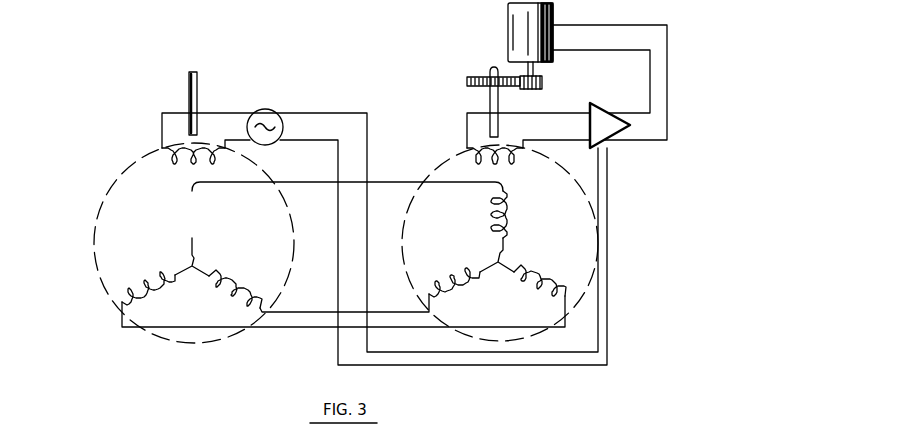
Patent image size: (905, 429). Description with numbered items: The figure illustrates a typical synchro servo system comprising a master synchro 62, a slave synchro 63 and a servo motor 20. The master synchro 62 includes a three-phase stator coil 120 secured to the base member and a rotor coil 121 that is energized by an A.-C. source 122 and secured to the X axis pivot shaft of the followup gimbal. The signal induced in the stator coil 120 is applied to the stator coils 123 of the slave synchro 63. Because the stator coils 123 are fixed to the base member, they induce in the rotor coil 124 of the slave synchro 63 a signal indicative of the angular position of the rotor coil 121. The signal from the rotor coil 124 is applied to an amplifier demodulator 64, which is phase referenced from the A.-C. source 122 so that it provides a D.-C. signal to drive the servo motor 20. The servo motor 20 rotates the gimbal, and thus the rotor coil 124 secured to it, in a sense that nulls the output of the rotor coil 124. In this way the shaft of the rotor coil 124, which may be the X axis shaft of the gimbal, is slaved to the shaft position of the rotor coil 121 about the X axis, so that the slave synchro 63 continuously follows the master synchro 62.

The servo motor 20 is at (520, 34).
The master synchro 62 is at (169, 243).
The slave synchro 63 is at (500, 243).
The amplifier demodulator 64 is at (606, 144).
The three-phase stator coil 120 is at (196, 258).
The rotor coil 121 is at (168, 162).
The A.-C. source 122 is at (270, 110).
The stator coils 123 is at (452, 278).
The rotor coil 124 is at (518, 163).